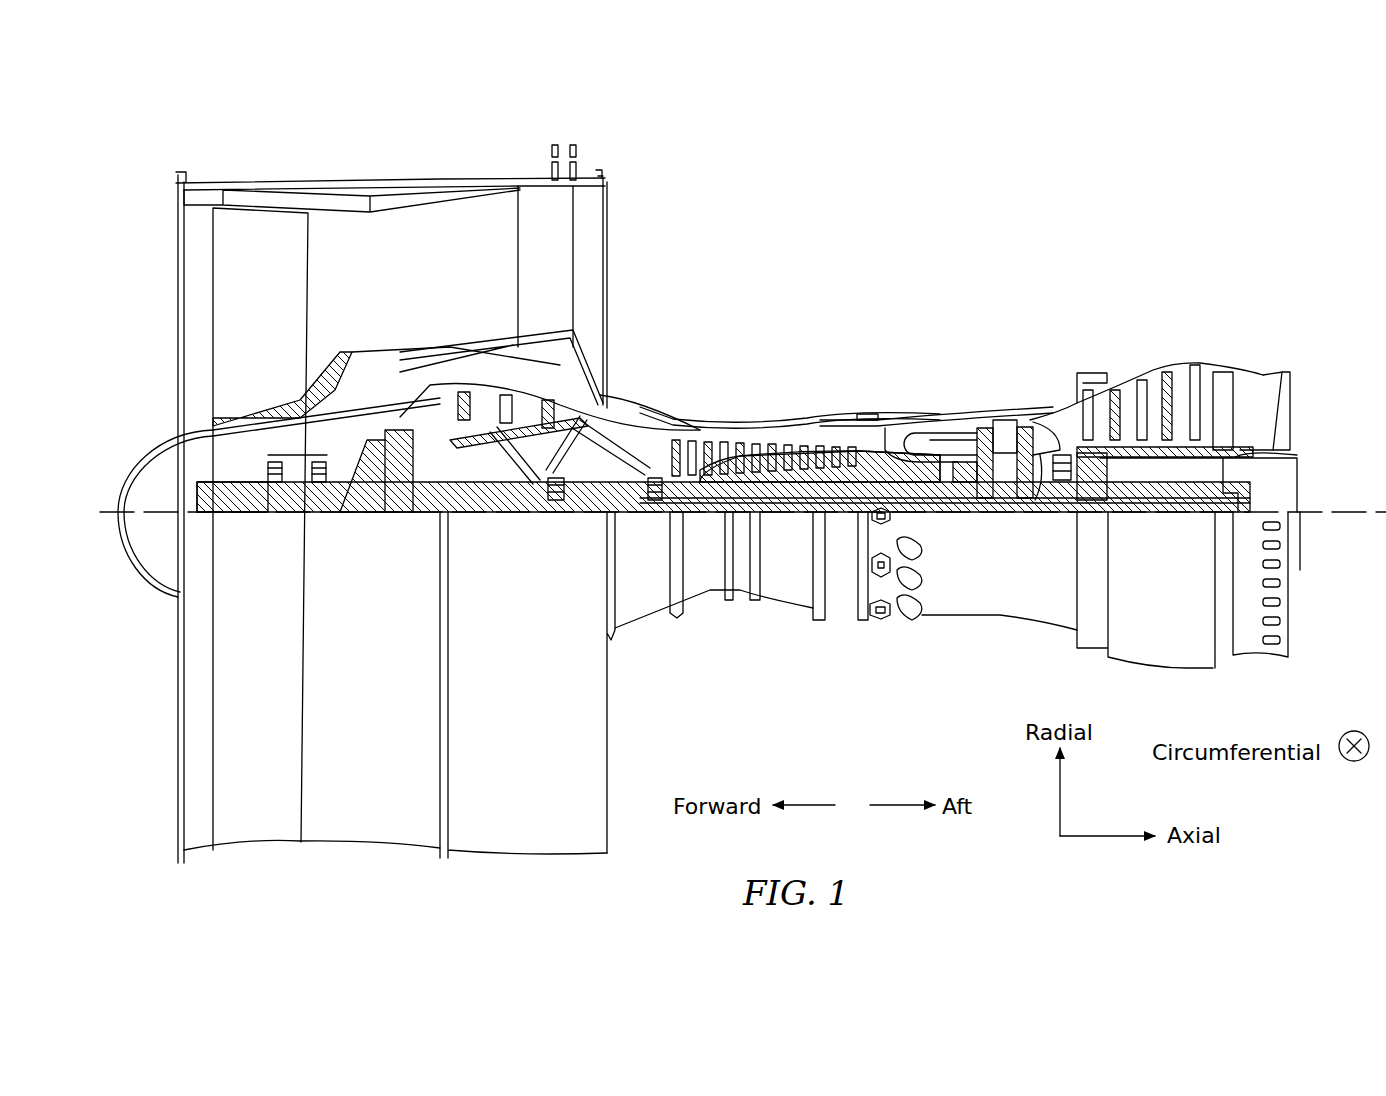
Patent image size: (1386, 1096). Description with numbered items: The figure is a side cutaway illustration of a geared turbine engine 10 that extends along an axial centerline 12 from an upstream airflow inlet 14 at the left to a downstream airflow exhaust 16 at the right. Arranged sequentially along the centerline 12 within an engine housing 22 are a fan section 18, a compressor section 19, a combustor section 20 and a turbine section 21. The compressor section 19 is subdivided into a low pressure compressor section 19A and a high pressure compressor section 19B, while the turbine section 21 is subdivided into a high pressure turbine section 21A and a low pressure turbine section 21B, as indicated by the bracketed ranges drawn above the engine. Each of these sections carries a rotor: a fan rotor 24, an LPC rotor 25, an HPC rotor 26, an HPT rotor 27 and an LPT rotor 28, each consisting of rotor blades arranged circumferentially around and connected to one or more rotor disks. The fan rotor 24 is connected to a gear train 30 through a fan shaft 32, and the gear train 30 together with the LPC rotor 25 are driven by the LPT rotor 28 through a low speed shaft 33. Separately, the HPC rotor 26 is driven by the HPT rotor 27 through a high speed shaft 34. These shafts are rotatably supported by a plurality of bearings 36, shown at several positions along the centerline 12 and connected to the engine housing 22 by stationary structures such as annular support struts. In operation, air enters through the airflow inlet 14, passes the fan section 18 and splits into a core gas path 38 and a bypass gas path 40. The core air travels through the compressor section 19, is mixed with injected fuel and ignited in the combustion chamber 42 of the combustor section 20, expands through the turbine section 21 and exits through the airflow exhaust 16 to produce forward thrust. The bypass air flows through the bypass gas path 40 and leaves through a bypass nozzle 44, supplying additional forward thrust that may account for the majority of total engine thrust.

The geared turbine engine 10 is at (148, 160).
The axial centerline 12 is at (1352, 540).
The airflow inlet 14 is at (178, 262).
The airflow exhaust 16 is at (1290, 405).
The fan section 18 is at (183, 157).
The compressor section 19 is at (840, 95).
The low pressure compressor (LPC) section 19A is at (608, 145).
The high pressure compressor (HPC) section 19B is at (840, 345).
The combustor section 20 is at (862, 345).
The turbine section 21 is at (978, 275).
The high pressure turbine (HPT) section 21A is at (1052, 345).
The low pressure turbine (LPT) section 21B is at (1248, 345).
The engine housing 22 is at (630, 630).
The fan rotor 24 is at (215, 440).
The LPC rotor 25 is at (505, 460).
The HPC rotor 26 is at (795, 480).
The HPT rotor 27 is at (1000, 482).
The LPT rotor 28 is at (1150, 460).
The gear train 30 is at (395, 512).
The fan shaft 32 is at (250, 512).
The low speed shaft 33 is at (848, 512).
The high speed shaft 34 is at (920, 512).
The bearings 36 is at (285, 512).
The core gas path/duct 38 is at (625, 432).
The bypass gas path/duct 40 is at (445, 276).
The combustion chamber 42 is at (928, 440).
The bypass nozzle 44 is at (605, 238).